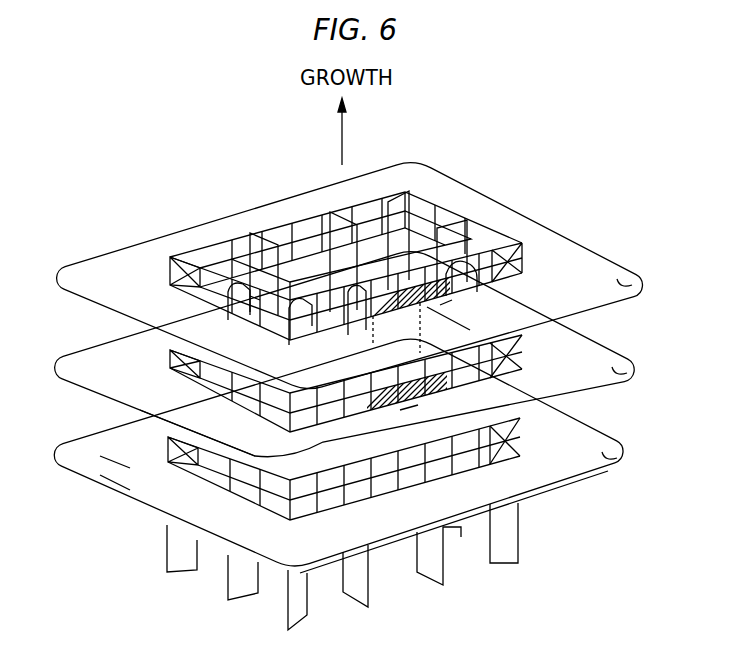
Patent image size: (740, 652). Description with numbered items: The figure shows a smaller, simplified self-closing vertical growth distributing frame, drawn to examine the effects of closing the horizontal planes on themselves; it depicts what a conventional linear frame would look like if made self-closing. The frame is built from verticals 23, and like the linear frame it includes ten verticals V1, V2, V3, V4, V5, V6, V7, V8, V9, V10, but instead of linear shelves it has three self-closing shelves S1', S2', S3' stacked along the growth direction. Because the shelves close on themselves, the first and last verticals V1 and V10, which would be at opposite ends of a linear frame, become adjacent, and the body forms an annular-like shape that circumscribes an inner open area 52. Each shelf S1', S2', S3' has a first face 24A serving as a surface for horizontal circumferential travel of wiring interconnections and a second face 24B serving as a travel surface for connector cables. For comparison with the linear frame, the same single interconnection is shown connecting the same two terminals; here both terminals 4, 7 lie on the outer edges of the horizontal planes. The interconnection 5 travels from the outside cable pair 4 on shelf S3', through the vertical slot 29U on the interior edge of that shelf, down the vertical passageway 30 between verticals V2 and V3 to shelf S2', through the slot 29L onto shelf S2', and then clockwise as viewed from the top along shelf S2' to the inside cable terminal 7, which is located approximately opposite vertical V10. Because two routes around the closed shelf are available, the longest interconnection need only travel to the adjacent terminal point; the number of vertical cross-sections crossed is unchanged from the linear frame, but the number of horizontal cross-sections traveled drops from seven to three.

The inner open area 52 is at (320, 254).
The vertical passageway 30 is at (415, 272).
The vertical V1 is at (290, 344).
The vertical V2 is at (349, 336).
The vertical V3 is at (476, 288).
The vertical V4 is at (510, 250).
The vertical V5 is at (463, 246).
The vertical V6 is at (414, 232).
The vertical V7 is at (346, 251).
The vertical V8 is at (265, 263).
The vertical V9 is at (171, 266).
The vertical V10 is at (229, 318).
The vertical slot 29U is at (366, 326).
The slot 29L is at (452, 390).
The outside cable pair 4 is at (470, 330).
The interconnection 5 is at (447, 318).
The inside cable terminal 7 is at (192, 433).
The verticals 23 is at (515, 533).
The first face 24A is at (108, 460).
The second face 24B is at (108, 502).
The self-closing shelf S1' is at (378, 456).
The self-closing shelf S2' is at (378, 354).
The self-closing shelf S3' is at (379, 276).